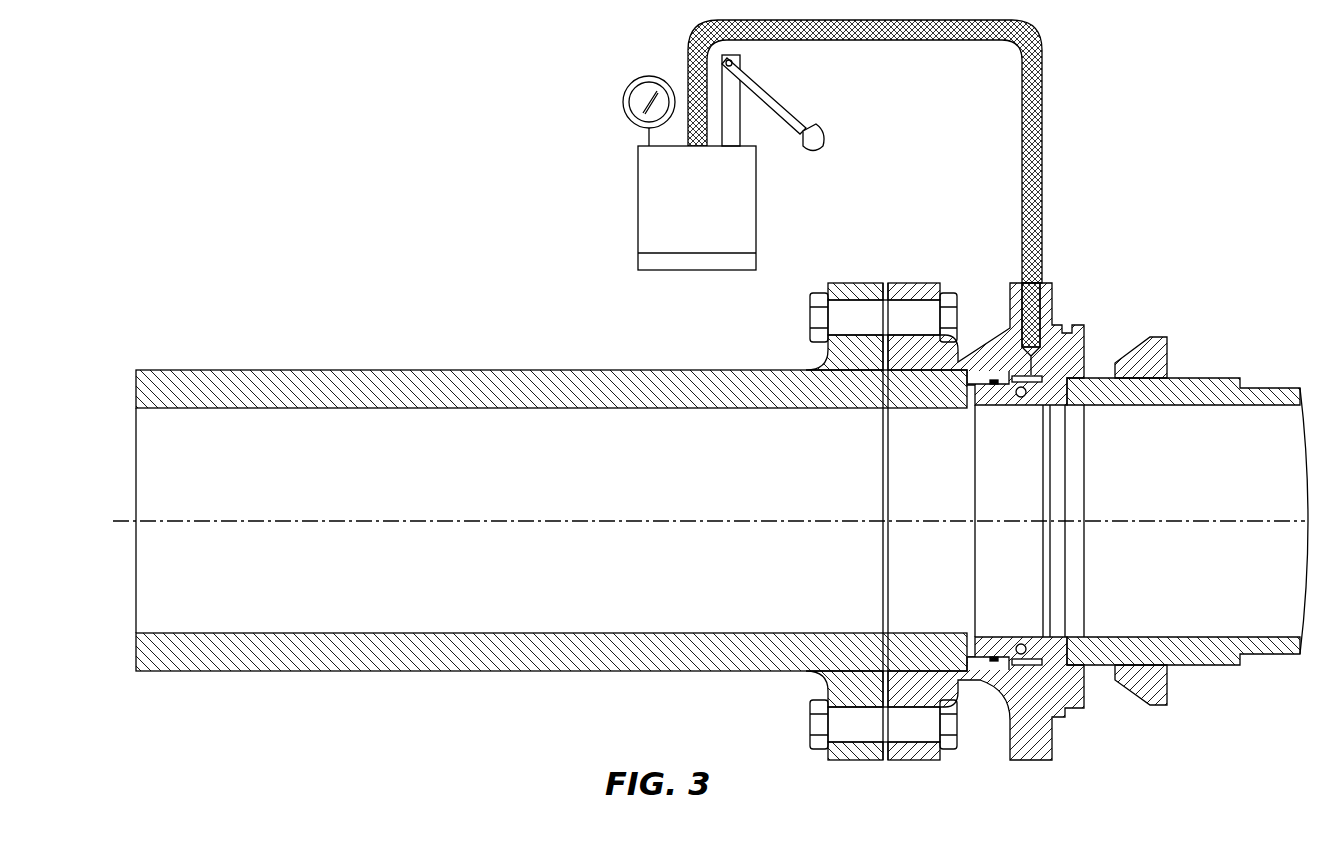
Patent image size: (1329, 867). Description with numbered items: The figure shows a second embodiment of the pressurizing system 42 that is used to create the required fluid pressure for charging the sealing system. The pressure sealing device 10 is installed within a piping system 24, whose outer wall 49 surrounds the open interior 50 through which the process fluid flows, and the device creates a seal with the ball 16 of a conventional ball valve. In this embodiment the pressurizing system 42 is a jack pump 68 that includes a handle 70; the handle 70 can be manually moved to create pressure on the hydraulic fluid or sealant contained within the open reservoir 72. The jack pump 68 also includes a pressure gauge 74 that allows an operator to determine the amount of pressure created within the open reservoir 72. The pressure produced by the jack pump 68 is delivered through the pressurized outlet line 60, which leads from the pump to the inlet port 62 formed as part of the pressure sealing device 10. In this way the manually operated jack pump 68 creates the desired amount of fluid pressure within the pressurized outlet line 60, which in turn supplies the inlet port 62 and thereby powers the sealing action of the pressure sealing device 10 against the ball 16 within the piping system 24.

The pressure sealing device 10 is at (977, 758).
The ball 16 is at (1213, 652).
The piping system 24 is at (551, 521).
The pressurizing system 42 is at (927, 420).
The outer wall 49 is at (601, 384).
The open interior 50 is at (401, 577).
The pressure outlet line 60 is at (1042, 122).
The inlet port 62 is at (1052, 287).
The jack pump 68 is at (703, 162).
The handle 70 is at (790, 112).
The open reservoir 72 is at (741, 213).
The pressure gauge 74 is at (625, 95).